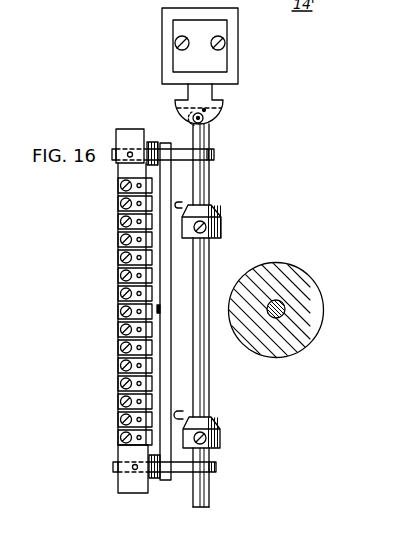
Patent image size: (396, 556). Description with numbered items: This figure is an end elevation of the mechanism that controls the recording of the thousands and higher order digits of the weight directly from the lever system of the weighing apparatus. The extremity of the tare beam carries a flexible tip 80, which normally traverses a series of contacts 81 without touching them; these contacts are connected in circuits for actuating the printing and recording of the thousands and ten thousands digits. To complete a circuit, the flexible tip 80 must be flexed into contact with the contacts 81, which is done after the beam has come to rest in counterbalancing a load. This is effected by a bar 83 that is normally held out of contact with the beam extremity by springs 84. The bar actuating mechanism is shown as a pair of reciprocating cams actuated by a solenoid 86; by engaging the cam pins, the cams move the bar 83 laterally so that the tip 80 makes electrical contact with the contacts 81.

The flexible tip 80 is at (161, 309).
The contacts 81 is at (118, 292).
The bar 83 is at (170, 265).
The springs 84 is at (152, 148).
The solenoid 86 is at (238, 72).